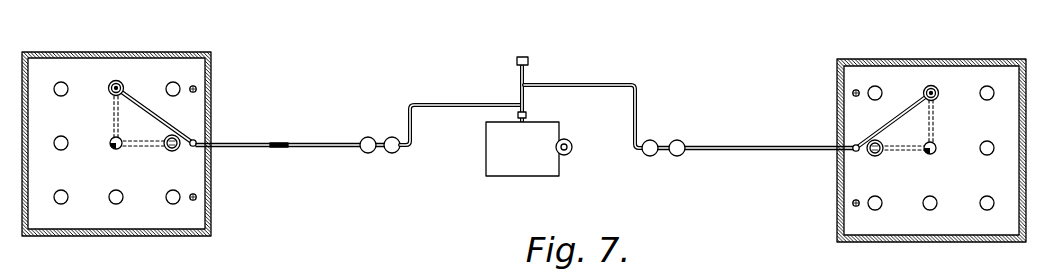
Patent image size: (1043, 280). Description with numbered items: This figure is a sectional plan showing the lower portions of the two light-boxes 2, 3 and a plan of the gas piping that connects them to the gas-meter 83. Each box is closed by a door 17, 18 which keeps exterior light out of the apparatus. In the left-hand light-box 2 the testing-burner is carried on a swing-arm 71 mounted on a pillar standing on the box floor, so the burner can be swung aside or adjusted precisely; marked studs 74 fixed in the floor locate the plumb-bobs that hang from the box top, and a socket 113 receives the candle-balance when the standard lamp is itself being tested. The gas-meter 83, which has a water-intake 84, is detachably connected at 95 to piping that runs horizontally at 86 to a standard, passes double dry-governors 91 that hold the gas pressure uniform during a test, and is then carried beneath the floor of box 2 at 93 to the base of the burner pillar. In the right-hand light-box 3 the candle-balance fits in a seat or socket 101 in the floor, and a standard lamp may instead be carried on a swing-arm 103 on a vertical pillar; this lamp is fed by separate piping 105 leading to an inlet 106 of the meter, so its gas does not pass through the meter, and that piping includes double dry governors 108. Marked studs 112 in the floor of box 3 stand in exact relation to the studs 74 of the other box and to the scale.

The light-box 2 is at (116, 123).
The light-box 3 is at (931, 131).
The door 17 is at (85, 234).
The door 18 is at (898, 243).
The swing-arm 71 is at (169, 125).
The marked studs 74 is at (196, 89).
The gas-meter 83 is at (522, 149).
The water-intake 84 is at (571, 153).
The piping 86 is at (463, 103).
The double dry-governors 91 is at (370, 154).
The piping 93 is at (233, 143).
The detachable connection 95 is at (527, 117).
The seat or socket 101 is at (883, 155).
The swing-arm 103 is at (902, 114).
The piping 105 is at (593, 83).
The inlet 106 is at (527, 57).
The double dry governors 108 is at (651, 157).
The marked studs 112 is at (852, 93).
The socket 113 is at (166, 150).